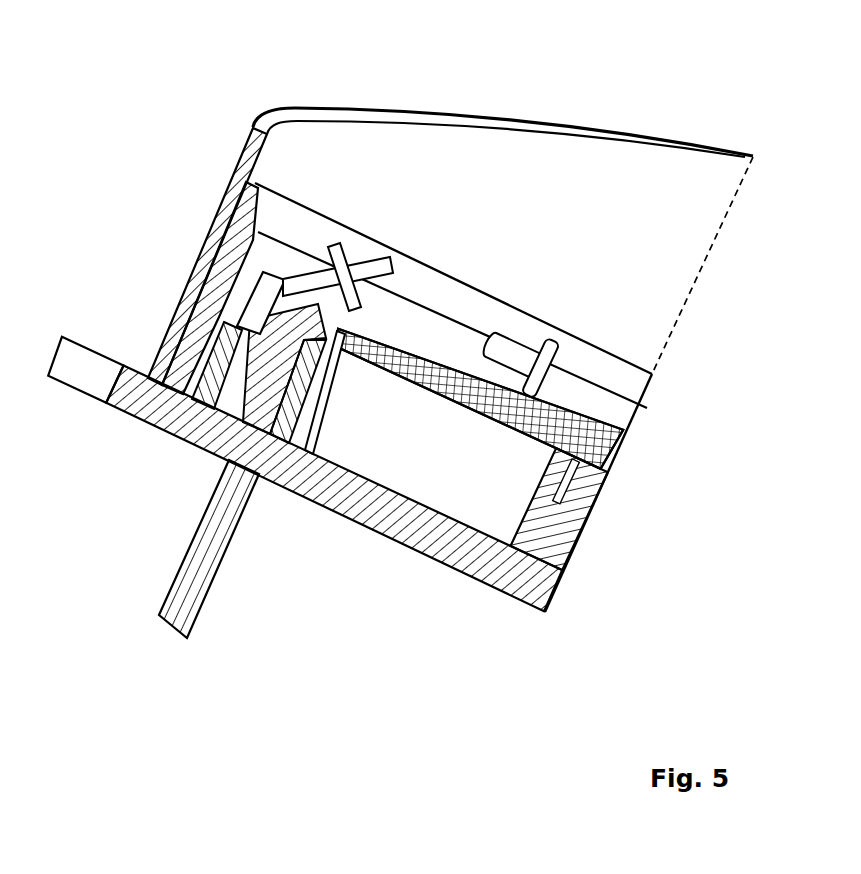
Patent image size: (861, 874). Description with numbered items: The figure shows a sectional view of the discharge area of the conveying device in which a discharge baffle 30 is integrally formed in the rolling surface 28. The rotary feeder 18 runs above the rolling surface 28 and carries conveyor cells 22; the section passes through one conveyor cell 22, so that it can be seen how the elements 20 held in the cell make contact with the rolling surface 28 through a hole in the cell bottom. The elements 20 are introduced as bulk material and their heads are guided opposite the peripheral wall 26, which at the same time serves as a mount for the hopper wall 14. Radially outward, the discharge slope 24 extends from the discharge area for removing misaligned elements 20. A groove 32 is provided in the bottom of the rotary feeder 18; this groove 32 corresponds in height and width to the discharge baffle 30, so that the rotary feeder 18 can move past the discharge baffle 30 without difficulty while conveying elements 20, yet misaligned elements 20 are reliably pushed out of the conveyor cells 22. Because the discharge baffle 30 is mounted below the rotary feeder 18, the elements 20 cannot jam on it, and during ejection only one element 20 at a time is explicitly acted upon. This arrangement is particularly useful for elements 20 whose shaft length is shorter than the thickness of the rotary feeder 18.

The hopper wall 14 is at (246, 133).
The rotary feeder 18 is at (477, 387).
The elements 20 is at (336, 245).
The conveyor cell 22 is at (367, 312).
The discharge slope 24 is at (517, 356).
The peripheral wall 26 is at (205, 240).
The rolling surface 28 is at (167, 327).
The discharge baffle 30 is at (303, 474).
The groove 32 is at (257, 290).